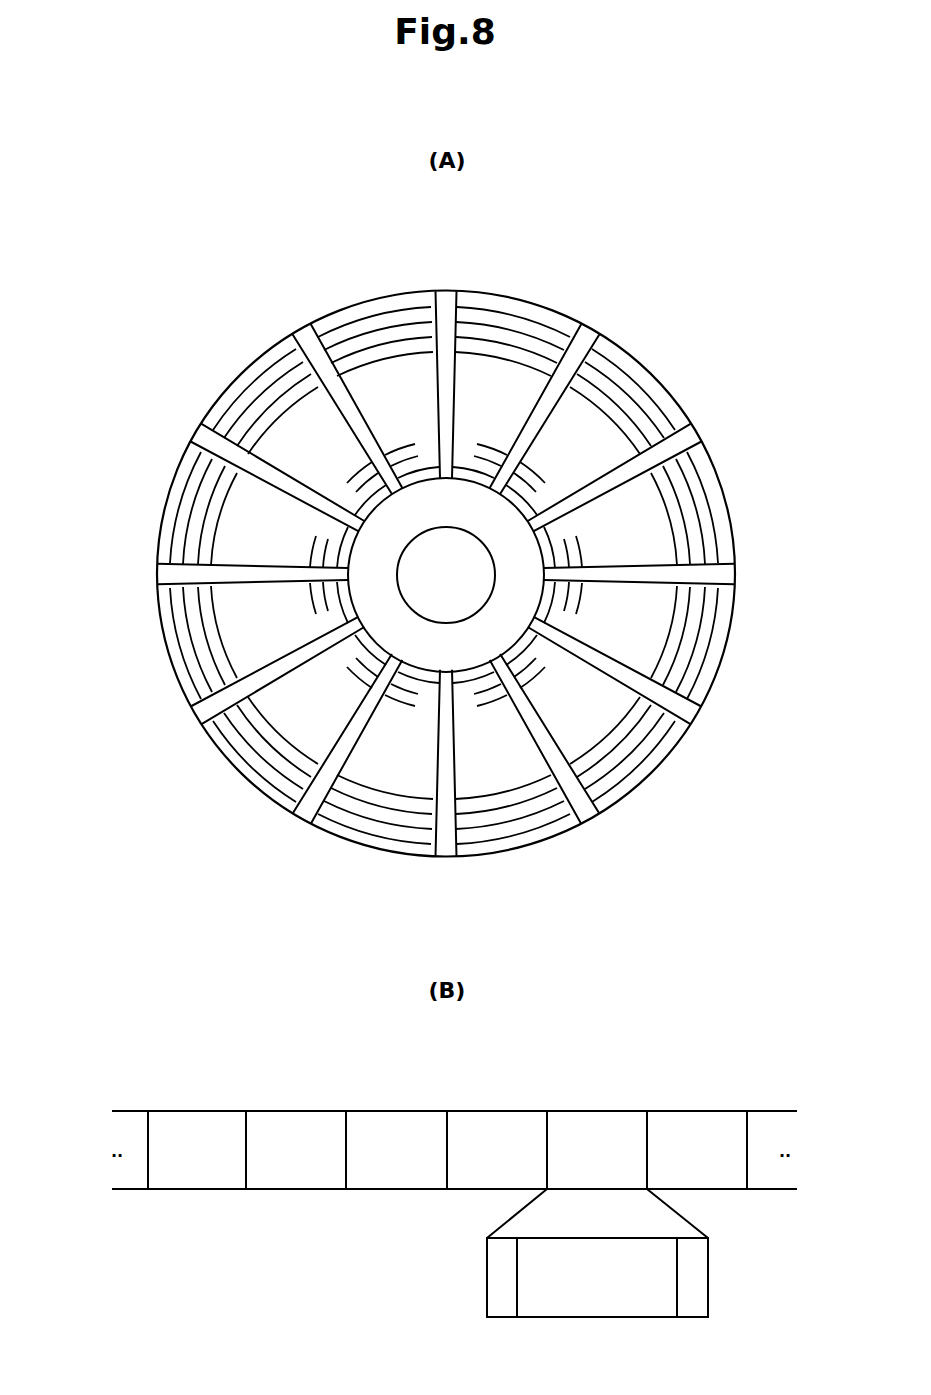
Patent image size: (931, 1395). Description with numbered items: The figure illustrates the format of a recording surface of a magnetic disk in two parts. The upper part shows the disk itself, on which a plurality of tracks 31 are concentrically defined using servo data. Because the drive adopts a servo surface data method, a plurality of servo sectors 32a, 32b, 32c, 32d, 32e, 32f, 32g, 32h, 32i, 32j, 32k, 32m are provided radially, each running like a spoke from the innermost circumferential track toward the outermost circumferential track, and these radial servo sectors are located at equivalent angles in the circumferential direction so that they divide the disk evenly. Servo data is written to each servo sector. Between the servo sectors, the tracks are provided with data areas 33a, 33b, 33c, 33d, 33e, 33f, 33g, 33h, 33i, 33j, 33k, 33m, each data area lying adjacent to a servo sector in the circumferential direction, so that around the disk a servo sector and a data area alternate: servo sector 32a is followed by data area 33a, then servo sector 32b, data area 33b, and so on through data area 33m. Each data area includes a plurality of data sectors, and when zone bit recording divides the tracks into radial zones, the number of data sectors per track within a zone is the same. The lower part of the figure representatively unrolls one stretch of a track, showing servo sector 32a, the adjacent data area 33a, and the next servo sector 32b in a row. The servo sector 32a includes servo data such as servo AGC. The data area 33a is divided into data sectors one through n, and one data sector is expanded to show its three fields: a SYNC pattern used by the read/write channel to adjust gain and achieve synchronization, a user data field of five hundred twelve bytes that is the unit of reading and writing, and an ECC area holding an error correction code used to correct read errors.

The tracks 31 is at (603, 808).
The servo sector 32a is at (300, 328).
The servo sector 32b is at (448, 290).
The servo sector 32c is at (593, 328).
The servo sector 32d is at (697, 432).
The servo sector 32e is at (735, 574).
The servo sector 32f is at (696, 716).
The servo sector 32g is at (591, 820).
The servo sector 32h is at (448, 858).
The servo sector 32i is at (300, 820).
The servo sector 32j is at (196, 716).
The servo sector 32k is at (157, 574).
The servo sector 32m is at (195, 432).
The data area 33a is at (310, 307).
The data area 33b is at (465, 276).
The data area 33c is at (614, 325).
The data area 33d is at (718, 440).
The data area 33e is at (749, 591).
The data area 33f is at (614, 821).
The data area 33g is at (465, 870).
The data area 33h is at (310, 839).
The data area 33i is at (278, 821).
The data area 33j is at (143, 591).
The data area 33k is at (174, 440).
The data area 33m is at (278, 325).